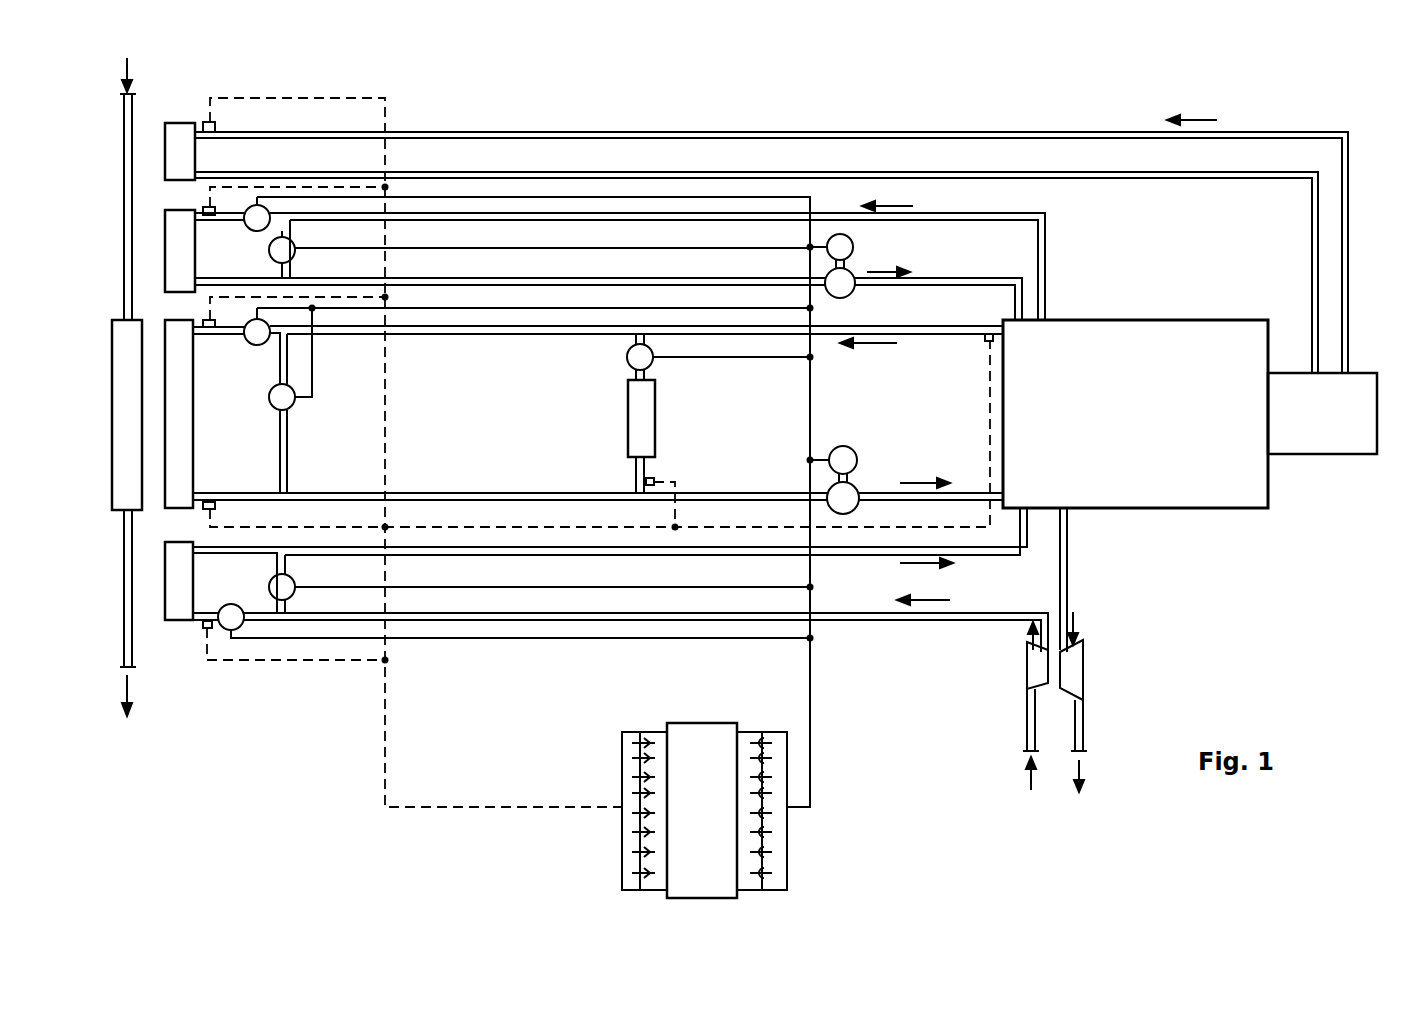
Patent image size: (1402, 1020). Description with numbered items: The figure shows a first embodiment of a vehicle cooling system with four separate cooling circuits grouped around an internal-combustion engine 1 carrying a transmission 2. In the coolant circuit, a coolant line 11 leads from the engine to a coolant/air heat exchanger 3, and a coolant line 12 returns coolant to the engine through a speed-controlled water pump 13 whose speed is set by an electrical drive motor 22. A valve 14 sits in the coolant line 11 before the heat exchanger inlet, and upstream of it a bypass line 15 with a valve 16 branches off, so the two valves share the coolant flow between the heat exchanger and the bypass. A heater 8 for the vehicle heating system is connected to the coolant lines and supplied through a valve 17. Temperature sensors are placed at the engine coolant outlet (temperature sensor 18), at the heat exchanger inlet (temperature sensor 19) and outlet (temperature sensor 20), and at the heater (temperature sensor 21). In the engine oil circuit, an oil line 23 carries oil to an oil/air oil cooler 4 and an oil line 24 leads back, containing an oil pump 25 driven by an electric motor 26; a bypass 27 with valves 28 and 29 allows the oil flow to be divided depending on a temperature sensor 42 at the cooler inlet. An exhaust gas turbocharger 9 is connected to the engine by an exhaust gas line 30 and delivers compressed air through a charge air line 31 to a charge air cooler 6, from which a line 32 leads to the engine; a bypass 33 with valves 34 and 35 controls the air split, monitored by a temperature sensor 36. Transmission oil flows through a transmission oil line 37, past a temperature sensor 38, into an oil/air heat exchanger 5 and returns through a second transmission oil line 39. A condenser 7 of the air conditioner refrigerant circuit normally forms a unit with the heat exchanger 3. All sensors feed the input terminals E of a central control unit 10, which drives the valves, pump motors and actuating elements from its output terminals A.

The internal-combustion engine 1 is at (1185, 495).
The transmission 2 is at (1330, 440).
The heat exchanger 3 is at (200, 393).
The oil cooler 4 is at (165, 250).
The heat exchanger 5 is at (165, 150).
The charge air cooler 6 is at (165, 583).
The condenser 7 is at (134, 362).
The heater 8 is at (628, 422).
The exhaust gas turbocharger 9 is at (1080, 660).
The central control unit 10 is at (703, 787).
The coolant line 11 is at (636, 348).
The coolant line 12 is at (466, 492).
The water pump 13 is at (857, 492).
The valve 14 is at (247, 340).
The bypass line 15 is at (279, 440).
The valve 16 is at (272, 404).
The valve 17 is at (627, 357).
The temperature sensor 18 is at (985, 340).
The temperature sensor 19 is at (205, 321).
The temperature sensor 20 is at (204, 508).
The temperature sensor 21 is at (656, 478).
The electrical drive motor 22 is at (857, 455).
The oil line 23 is at (506, 221).
The oil line 24 is at (555, 250).
The oil pump 25 is at (853, 290).
The electric motor 26 is at (855, 247).
The bypass 27 is at (272, 258).
The valve 28 is at (247, 226).
The valve 29 is at (295, 254).
The exhaust gas line 30 is at (1068, 566).
The charge air line 31 is at (898, 621).
The line 32 is at (505, 553).
The bypass 33 is at (286, 556).
The valve 34 is at (226, 605).
The valve 35 is at (270, 580).
The temperature sensor 36 is at (207, 628).
The transmission oil line 37 is at (637, 132).
The temperature sensor 38 is at (207, 121).
The second transmission oil line 39 is at (524, 170).
The temperature sensor 42 is at (205, 207).
The input terminals E is at (622, 843).
The output terminals A is at (787, 848).